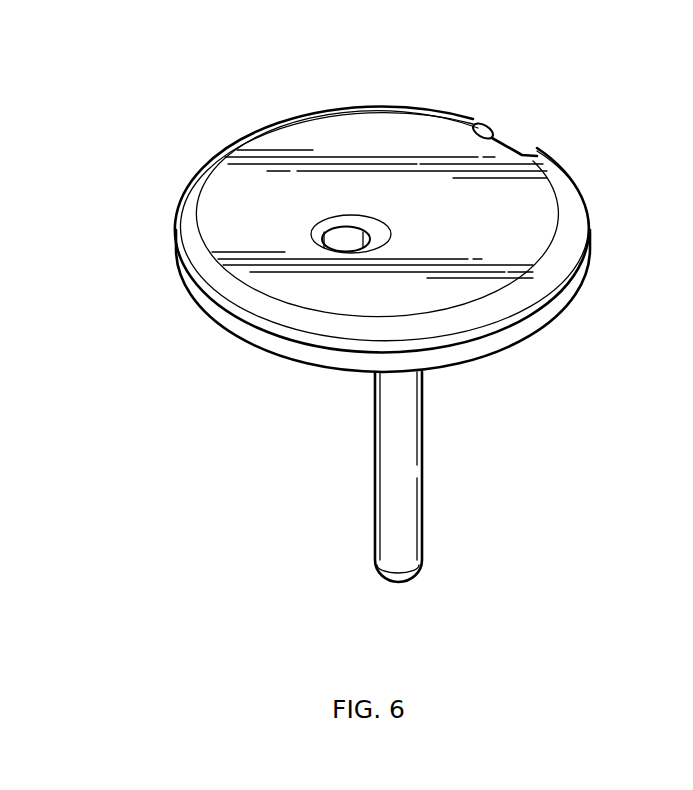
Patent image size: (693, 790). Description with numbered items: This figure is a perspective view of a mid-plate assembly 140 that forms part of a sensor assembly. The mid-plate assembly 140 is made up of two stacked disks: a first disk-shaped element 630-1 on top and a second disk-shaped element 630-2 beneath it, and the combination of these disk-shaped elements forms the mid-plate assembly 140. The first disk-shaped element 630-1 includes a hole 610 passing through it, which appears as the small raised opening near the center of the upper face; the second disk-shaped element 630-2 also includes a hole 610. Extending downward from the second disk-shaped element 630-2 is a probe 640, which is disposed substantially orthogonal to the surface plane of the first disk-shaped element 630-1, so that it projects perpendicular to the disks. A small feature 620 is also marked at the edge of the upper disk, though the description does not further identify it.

The mid-plate assembly 140 is at (203, 100).
The first disk-shaped element 630-1 is at (360, 128).
The notch 620 is at (520, 141).
The hole 610 is at (350, 243).
The second disk-shaped element 630-2 is at (296, 357).
The probe 640 is at (383, 478).